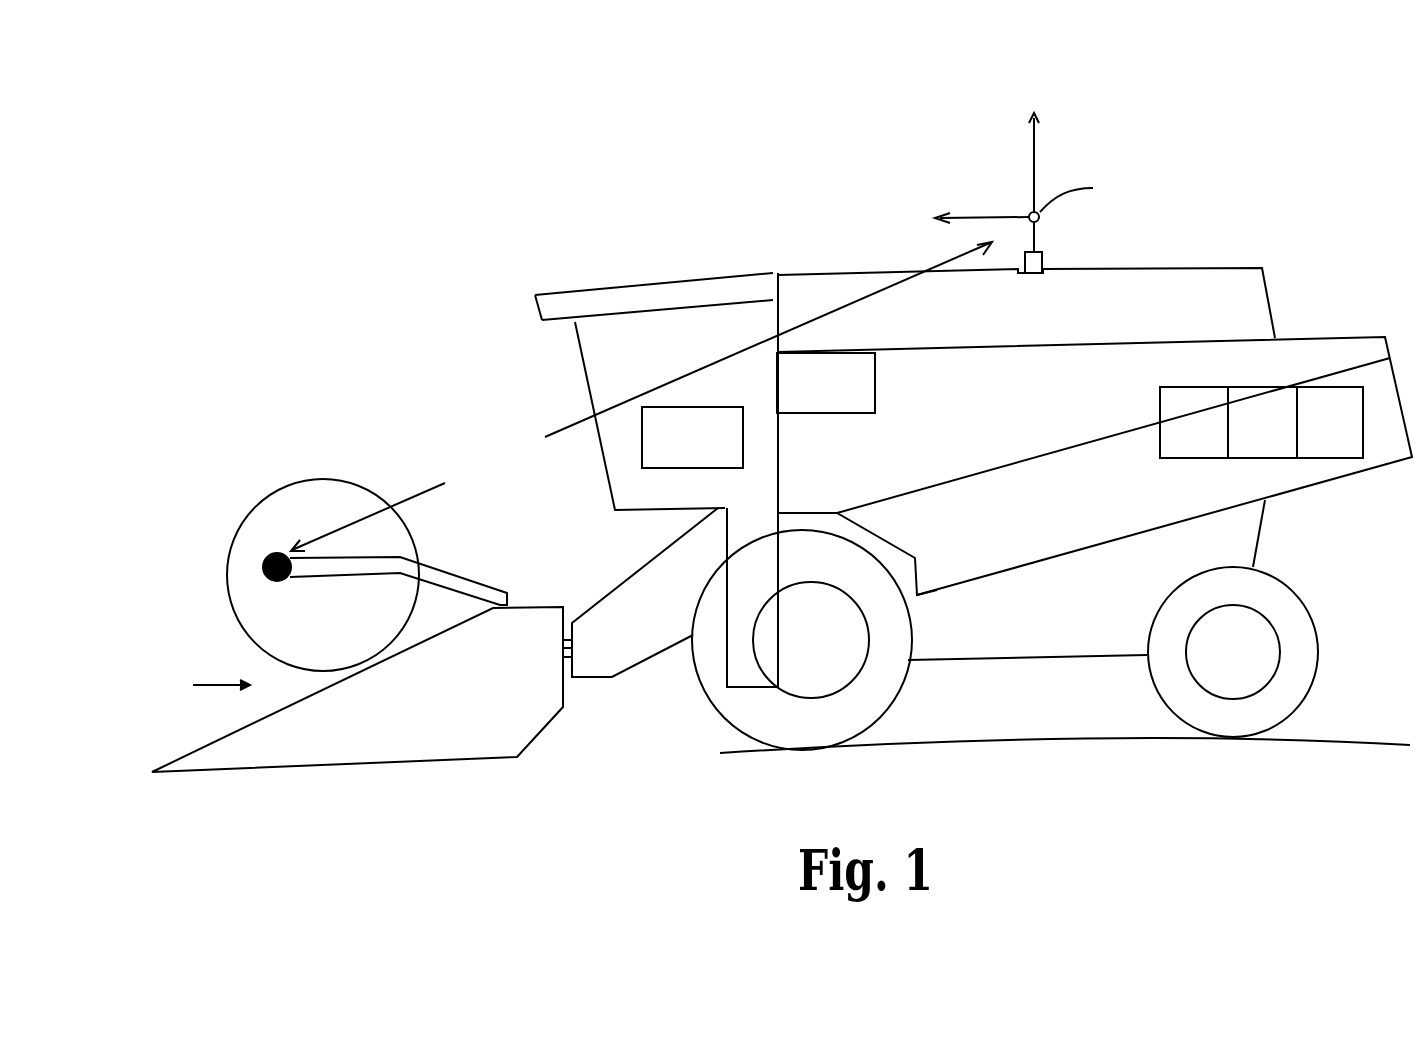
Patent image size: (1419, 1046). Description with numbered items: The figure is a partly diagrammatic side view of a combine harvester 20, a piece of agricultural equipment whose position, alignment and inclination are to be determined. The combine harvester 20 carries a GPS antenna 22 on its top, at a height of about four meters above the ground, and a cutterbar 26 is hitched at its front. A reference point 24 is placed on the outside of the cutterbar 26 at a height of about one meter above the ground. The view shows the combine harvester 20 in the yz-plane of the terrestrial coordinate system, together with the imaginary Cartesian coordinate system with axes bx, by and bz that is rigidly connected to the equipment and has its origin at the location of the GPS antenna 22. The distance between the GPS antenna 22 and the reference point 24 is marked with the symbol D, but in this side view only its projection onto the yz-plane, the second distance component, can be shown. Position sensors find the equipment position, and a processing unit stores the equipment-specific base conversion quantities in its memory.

The combine harvester 20 is at (766, 419).
The GPS antenna 22 is at (1043, 262).
The reference point 24 is at (262, 570).
The cutterbar 26 is at (200, 686).